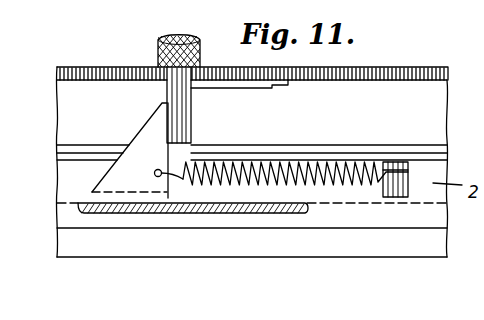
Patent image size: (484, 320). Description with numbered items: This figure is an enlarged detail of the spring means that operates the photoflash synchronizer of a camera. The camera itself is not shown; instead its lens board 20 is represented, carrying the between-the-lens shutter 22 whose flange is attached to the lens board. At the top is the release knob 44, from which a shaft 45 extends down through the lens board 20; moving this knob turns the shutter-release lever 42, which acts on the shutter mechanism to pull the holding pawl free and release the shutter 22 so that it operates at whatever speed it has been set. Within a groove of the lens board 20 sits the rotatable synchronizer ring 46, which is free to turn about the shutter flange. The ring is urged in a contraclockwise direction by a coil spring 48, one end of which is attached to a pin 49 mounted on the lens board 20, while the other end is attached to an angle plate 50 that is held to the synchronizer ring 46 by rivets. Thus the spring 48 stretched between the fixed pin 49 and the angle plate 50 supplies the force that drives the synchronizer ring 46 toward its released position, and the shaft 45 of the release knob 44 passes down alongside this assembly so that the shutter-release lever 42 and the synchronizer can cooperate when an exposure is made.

The lens board 20 is at (276, 243).
The shutter 22 is at (398, 80).
The shutter-release lever 42 is at (257, 81).
The release knob 44 is at (158, 43).
The shaft 45 is at (186, 129).
The synchronizer ring 46 is at (197, 205).
The spring 48 is at (318, 160).
The pin 49 is at (400, 163).
The angle plate 50 is at (143, 144).